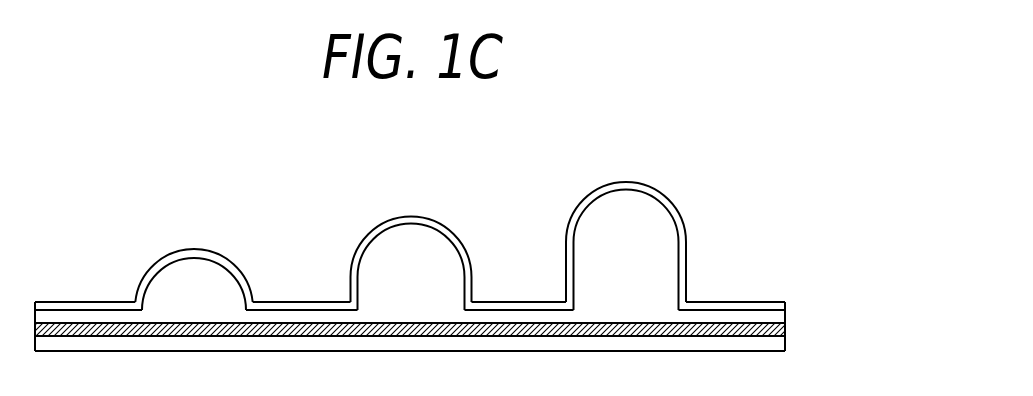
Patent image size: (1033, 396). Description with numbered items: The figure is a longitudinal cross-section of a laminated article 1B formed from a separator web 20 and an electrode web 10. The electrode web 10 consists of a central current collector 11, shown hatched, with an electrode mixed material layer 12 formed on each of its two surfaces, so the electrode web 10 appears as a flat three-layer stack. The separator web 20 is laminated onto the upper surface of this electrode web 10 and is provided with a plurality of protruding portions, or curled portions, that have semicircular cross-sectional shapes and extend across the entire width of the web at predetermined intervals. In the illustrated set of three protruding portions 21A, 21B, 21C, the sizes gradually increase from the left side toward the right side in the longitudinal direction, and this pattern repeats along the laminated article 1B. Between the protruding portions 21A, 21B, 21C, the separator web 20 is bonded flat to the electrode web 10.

The laminated article 1B is at (562, 130).
The separator web 20 is at (738, 302).
The protruding portion 21A is at (221, 240).
The protruding portion 21B is at (431, 207).
The protruding portion 21C is at (636, 172).
The electrode web 10 is at (845, 283).
The current collector 11 is at (782, 327).
The electrode mixed material layer 12 is at (780, 317).